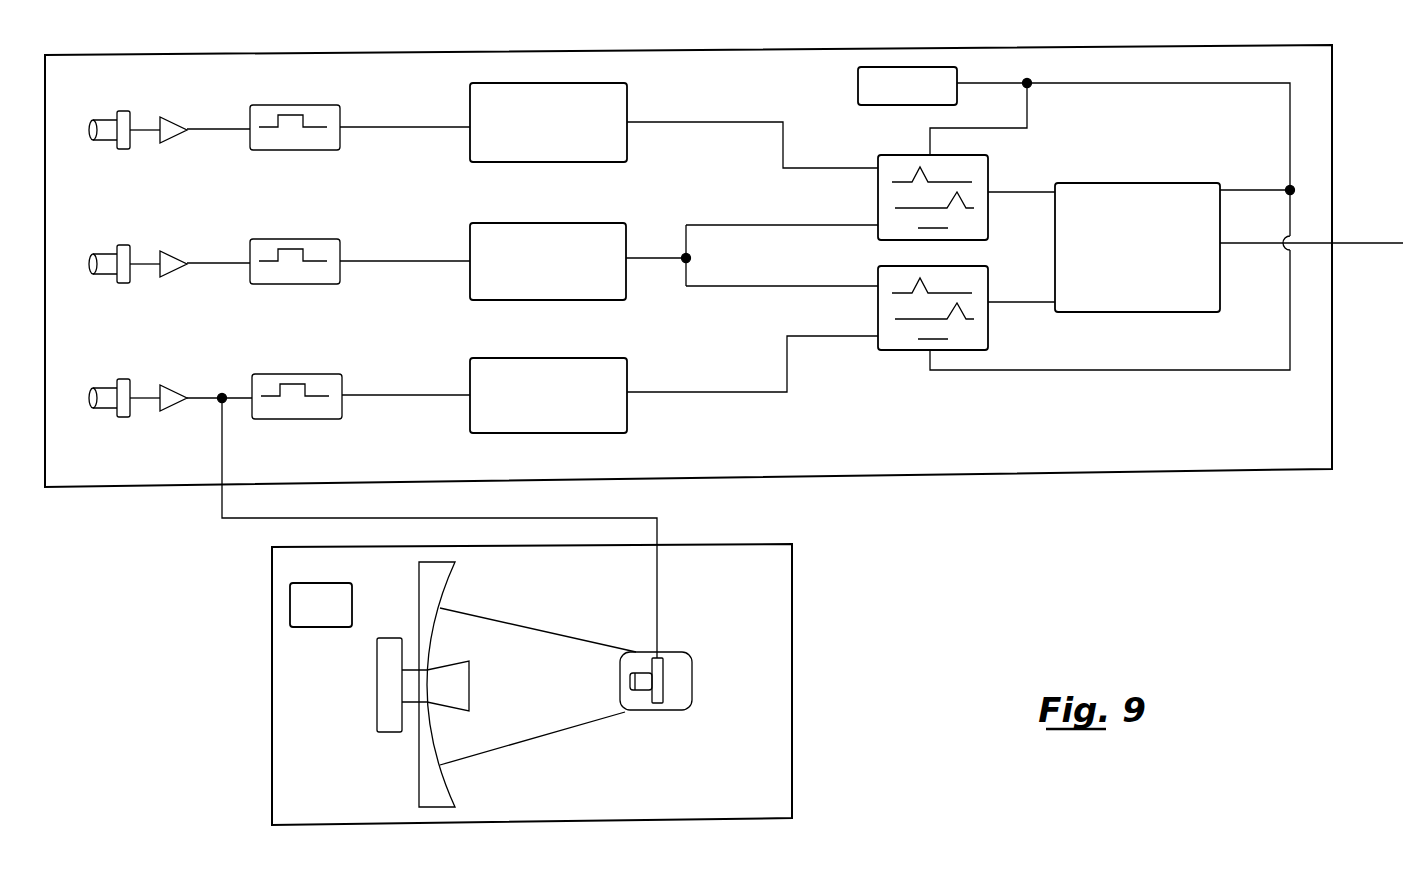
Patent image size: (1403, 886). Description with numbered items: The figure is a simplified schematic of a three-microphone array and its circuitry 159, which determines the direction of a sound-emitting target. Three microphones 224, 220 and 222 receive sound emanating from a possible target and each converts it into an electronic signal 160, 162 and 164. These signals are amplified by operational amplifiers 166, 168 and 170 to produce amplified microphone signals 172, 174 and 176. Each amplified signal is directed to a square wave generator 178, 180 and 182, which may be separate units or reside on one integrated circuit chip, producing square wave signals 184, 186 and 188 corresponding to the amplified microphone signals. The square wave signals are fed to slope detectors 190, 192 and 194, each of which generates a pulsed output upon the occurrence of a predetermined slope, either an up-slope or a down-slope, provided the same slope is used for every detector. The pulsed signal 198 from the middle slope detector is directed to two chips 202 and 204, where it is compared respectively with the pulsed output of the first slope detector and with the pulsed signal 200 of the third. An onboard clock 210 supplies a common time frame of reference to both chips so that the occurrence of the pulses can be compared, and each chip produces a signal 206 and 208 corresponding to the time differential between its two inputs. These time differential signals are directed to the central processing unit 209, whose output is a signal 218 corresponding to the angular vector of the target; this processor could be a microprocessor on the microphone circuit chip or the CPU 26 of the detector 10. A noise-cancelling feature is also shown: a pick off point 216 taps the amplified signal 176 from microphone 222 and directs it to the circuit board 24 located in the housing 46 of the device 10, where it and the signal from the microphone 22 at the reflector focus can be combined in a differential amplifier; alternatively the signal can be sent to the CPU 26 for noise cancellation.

The monitor 10 is at (792, 749).
The microphone 22 is at (638, 690).
The circuit board 24 is at (658, 704).
The CPU 26 is at (352, 600).
The housing 46 is at (672, 652).
The microphone array and circuitry 159 is at (1000, 470).
The electronic signal 160 is at (144, 127).
The electronic signal 162 is at (146, 262).
The electronic signal 164 is at (146, 396).
The operational amplifier 166 is at (172, 143).
The operational amplifier 168 is at (173, 278).
The operational amplifier 170 is at (170, 413).
The amplified microphone signal 172 is at (205, 127).
The amplified microphone signal 174 is at (206, 262).
The amplified microphone signal 176 is at (202, 396).
The square wave generator 178 is at (280, 150).
The square wave generator 180 is at (285, 286).
The square wave generator 182 is at (330, 420).
The square wave signal 184 is at (402, 126).
The square wave signal 186 is at (405, 260).
The square wave signal 188 is at (404, 394).
The slope detector 190 is at (648, 120).
The slope detector 192 is at (513, 300).
The slope detector 194 is at (568, 434).
The pulsed signal 198 is at (736, 222).
The pulsed signal 200 is at (656, 390).
The chip 202 is at (880, 156).
The chip 204 is at (990, 320).
The time differential signal 206 is at (1013, 191).
The time differential signal 208 is at (1013, 301).
The central processing unit 209 is at (1141, 182).
The onboard clock 210 is at (858, 83).
The pick off point 216 is at (220, 405).
The output signal 218 is at (1243, 242).
The microphone 220 is at (120, 288).
The microphone 222 is at (120, 422).
The microphone 224 is at (118, 152).